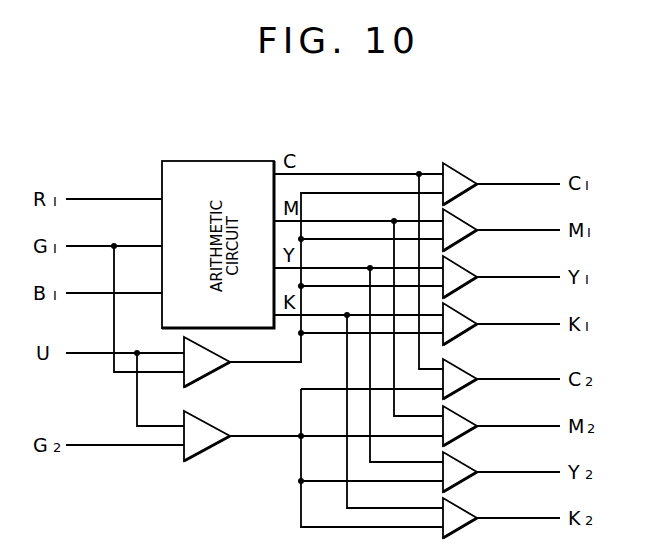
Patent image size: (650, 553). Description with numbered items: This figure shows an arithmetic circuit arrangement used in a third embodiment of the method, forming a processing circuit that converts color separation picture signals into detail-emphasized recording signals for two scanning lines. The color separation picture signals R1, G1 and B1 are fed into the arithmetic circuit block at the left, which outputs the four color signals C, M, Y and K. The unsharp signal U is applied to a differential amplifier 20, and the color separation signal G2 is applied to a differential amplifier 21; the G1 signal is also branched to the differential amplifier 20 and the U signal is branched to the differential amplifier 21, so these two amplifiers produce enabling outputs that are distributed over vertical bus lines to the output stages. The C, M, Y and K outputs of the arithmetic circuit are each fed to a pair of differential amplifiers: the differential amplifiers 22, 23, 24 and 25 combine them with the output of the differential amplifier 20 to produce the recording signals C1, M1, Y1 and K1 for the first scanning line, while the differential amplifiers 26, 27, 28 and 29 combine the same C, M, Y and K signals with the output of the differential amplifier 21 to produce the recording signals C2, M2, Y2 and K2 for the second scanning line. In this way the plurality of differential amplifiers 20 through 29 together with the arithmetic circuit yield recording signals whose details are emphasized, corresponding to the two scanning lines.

The differential amplifier 20 is at (203, 369).
The differential amplifier 21 is at (203, 443).
The differential amplifier 22 is at (463, 181).
The differential amplifier 23 is at (463, 227).
The differential amplifier 24 is at (463, 274).
The differential amplifier 25 is at (463, 321).
The differential amplifier 26 is at (463, 376).
The differential amplifier 27 is at (463, 423).
The differential amplifier 28 is at (463, 469).
The differential amplifier 29 is at (463, 515).